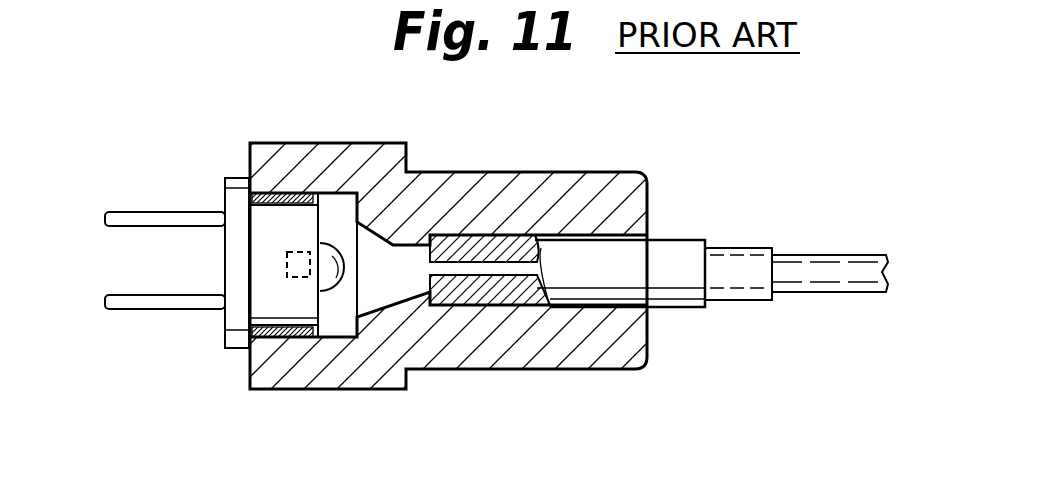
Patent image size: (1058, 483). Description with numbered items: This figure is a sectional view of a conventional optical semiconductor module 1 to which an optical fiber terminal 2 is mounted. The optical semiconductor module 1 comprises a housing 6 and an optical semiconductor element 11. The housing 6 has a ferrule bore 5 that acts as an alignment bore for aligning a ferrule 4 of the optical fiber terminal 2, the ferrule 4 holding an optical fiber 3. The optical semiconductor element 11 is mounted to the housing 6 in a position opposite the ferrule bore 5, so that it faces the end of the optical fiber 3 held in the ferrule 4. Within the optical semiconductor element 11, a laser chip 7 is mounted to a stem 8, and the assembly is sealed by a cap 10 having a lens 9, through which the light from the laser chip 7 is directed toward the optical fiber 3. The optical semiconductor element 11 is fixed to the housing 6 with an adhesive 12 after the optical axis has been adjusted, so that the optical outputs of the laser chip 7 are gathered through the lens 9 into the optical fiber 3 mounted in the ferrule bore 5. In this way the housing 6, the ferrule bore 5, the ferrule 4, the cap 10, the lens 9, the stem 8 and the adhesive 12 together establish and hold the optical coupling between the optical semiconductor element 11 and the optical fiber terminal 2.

The optical semiconductor module 1 is at (496, 260).
The optical fiber terminal 2 is at (720, 287).
The optical fiber 3 is at (490, 278).
The ferrule 4 is at (623, 290).
The ferrule bore 5 is at (602, 298).
The housing 6 is at (562, 172).
The laser chip 7 is at (310, 253).
The stem 8 is at (233, 320).
The lens 9 is at (348, 275).
The cap 10 is at (333, 272).
The optical semiconductor element 11 is at (190, 213).
The adhesive 12 is at (292, 338).